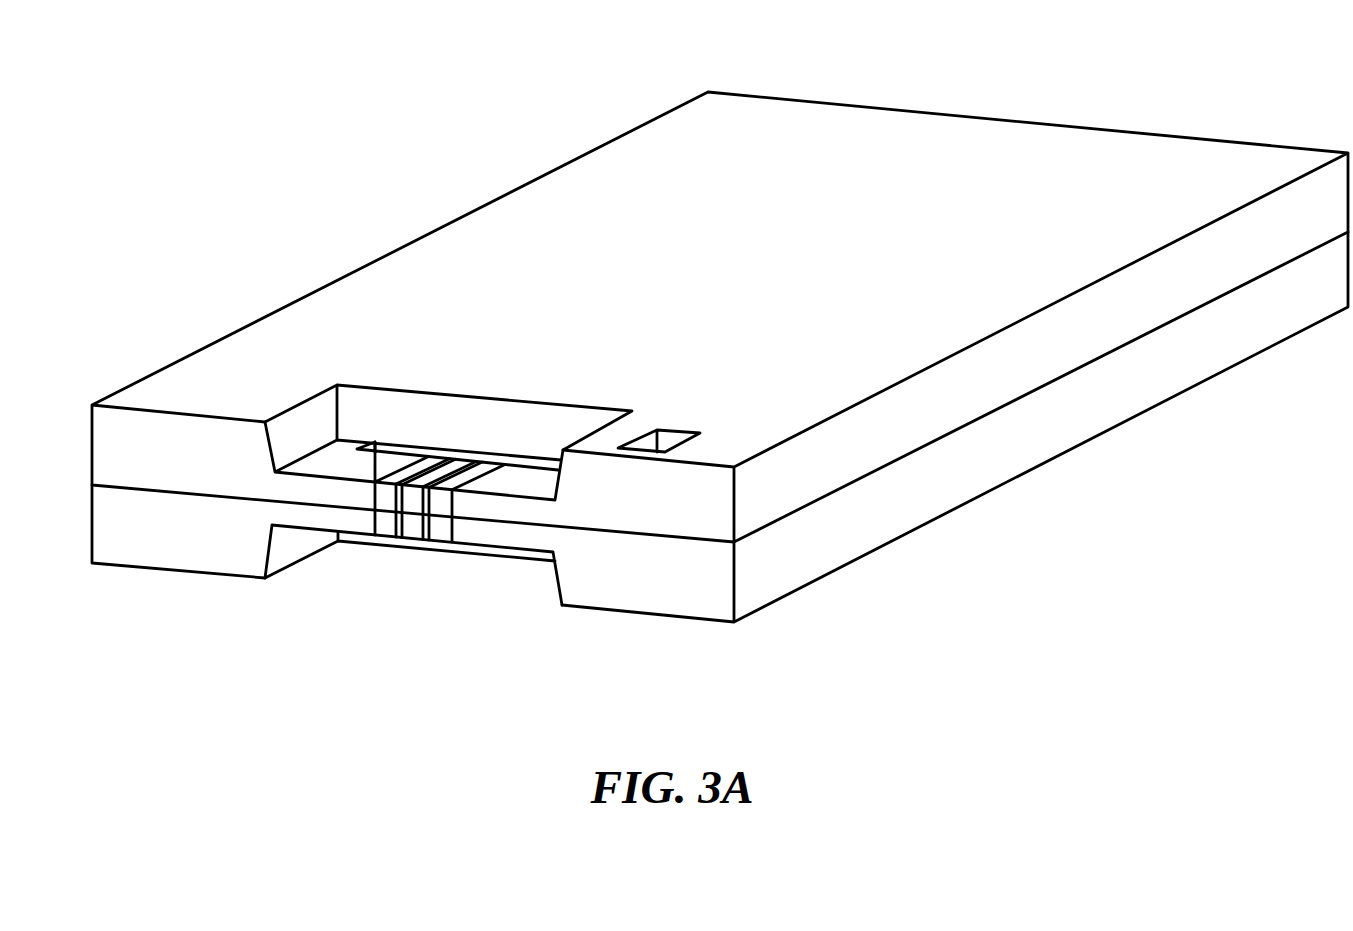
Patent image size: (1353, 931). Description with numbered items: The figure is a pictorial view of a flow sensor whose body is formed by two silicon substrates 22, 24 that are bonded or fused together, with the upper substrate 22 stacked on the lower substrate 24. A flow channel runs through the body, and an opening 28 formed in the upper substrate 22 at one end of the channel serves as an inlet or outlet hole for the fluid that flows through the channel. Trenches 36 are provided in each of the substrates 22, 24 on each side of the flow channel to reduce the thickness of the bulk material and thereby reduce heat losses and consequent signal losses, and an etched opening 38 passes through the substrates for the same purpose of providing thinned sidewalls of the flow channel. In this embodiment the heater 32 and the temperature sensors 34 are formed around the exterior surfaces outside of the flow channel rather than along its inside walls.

The silicon substrate 22 is at (1108, 172).
The silicon substrate 24 is at (690, 622).
The opening 28 is at (672, 440).
The heater 32 is at (415, 530).
The temperature sensors 34 is at (389, 527).
The trenches 36 is at (315, 421).
The etched opening 38 is at (528, 465).